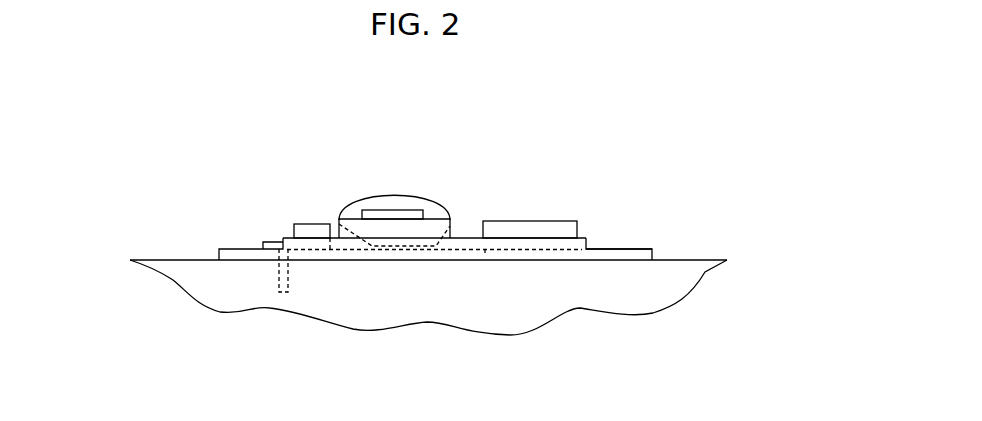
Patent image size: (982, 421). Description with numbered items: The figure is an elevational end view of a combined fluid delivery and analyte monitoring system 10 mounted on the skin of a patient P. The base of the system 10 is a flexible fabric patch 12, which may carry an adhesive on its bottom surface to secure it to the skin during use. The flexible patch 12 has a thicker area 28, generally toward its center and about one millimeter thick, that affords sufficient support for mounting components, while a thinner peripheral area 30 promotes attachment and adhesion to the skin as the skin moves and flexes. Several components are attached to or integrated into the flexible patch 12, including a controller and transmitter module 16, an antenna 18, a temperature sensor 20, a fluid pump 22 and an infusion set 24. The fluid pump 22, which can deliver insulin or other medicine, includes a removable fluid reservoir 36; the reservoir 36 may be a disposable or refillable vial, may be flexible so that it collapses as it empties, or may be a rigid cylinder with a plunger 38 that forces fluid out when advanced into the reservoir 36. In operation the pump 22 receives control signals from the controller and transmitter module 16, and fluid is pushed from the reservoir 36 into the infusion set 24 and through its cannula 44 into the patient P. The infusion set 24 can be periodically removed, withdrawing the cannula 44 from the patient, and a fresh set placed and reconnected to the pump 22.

The combined fluid delivery and analyte monitoring system 10 is at (751, 169).
The flexible fabric patch 12 is at (620, 252).
The controller and transmitter module 16 is at (527, 222).
The antenna 18 is at (313, 224).
The temperature sensor 20 is at (466, 238).
The fluid pump 22 is at (386, 176).
The infusion set 24 is at (263, 242).
The thicker area 28 is at (463, 250).
The peripheral area 30 is at (600, 249).
The removable fluid reservoir 36 is at (370, 197).
The plunger 38 is at (409, 211).
The cannula 44 is at (275, 282).
The patient P is at (502, 297).